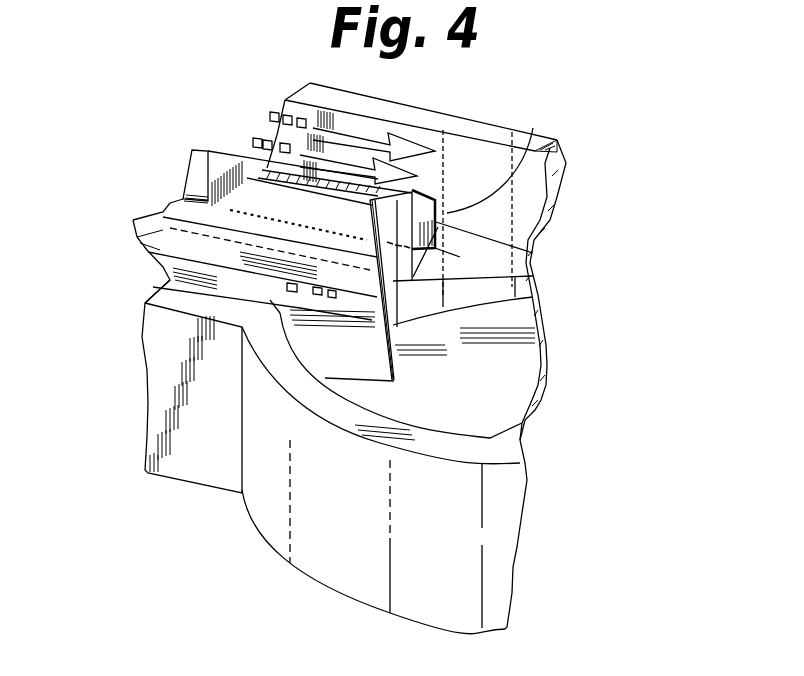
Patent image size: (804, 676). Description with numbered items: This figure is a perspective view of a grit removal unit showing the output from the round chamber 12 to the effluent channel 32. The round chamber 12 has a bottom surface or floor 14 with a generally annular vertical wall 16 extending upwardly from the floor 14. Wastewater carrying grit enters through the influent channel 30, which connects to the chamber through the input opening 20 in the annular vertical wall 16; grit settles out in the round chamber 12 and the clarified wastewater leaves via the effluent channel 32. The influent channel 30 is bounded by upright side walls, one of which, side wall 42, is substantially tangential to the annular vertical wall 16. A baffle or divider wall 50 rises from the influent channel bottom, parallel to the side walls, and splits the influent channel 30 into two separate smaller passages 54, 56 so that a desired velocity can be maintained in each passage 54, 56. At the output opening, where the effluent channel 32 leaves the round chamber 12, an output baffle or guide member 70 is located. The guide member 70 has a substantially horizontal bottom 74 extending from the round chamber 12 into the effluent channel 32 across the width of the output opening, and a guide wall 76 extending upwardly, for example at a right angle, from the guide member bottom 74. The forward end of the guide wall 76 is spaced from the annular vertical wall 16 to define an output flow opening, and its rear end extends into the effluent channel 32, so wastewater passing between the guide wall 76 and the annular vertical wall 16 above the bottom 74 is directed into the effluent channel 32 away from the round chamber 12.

The round chamber 12 is at (353, 430).
The bottom surface or floor 14 is at (483, 405).
The annular vertical wall 16 is at (527, 425).
The input opening 20 is at (494, 258).
The influent channel 30 is at (253, 127).
The effluent channel 32 is at (131, 221).
The upright side wall 42 is at (530, 190).
The baffle or divider wall 50 is at (198, 189).
The influent channel passage 54 is at (443, 213).
The influent channel passage 56 is at (437, 225).
The output baffle or guide member 70 is at (320, 348).
The guide member bottom 74 is at (363, 369).
The guide wall 76 is at (368, 297).